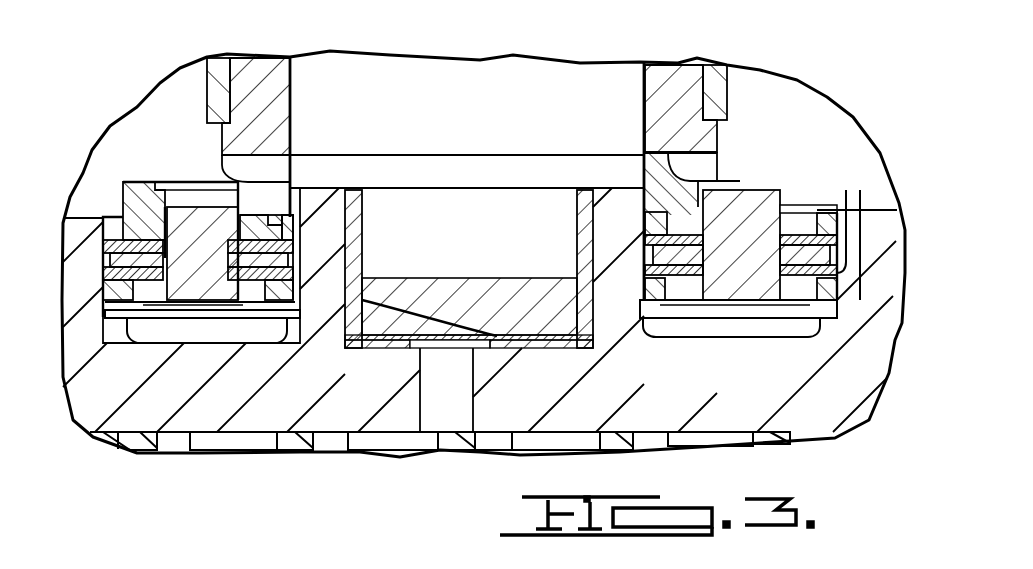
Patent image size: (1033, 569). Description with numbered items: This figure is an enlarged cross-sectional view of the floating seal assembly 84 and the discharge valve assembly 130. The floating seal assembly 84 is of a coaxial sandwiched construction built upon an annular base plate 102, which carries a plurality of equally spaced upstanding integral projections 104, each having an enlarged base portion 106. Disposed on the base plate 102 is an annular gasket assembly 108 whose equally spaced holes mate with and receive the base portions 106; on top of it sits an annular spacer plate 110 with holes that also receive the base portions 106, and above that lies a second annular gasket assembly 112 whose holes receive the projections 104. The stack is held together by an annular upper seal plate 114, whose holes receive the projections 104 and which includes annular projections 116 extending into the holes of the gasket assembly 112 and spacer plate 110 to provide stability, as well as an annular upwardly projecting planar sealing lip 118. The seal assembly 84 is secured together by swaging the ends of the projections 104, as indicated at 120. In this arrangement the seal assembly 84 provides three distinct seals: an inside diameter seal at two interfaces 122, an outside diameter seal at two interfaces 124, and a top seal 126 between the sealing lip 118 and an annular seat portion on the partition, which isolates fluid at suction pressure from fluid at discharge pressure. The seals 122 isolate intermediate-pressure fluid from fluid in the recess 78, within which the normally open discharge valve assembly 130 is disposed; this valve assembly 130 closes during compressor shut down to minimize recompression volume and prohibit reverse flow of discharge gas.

The recess 78 is at (577, 243).
The floating seal assembly 84 is at (765, 90).
The annular base plate 102 is at (737, 287).
The upstanding integral projections 104 is at (748, 220).
The enlarged base portion 106 is at (181, 232).
The annular gasket assembly 108 is at (85, 290).
The annular spacer plate 110 is at (197, 303).
The annular gasket assembly 112 is at (104, 236).
The annular upper seal plate 114 is at (136, 193).
The annular projections 116 is at (240, 242).
The upwardly projecting planar sealing lip 118 is at (297, 160).
The swaged ends of projections 120 is at (733, 193).
The inside diameter seal interfaces 122 is at (255, 263).
The outside diameter seal interfaces 124 is at (848, 202).
The top seal 126 is at (282, 168).
The discharge valve assembly 130 is at (460, 287).